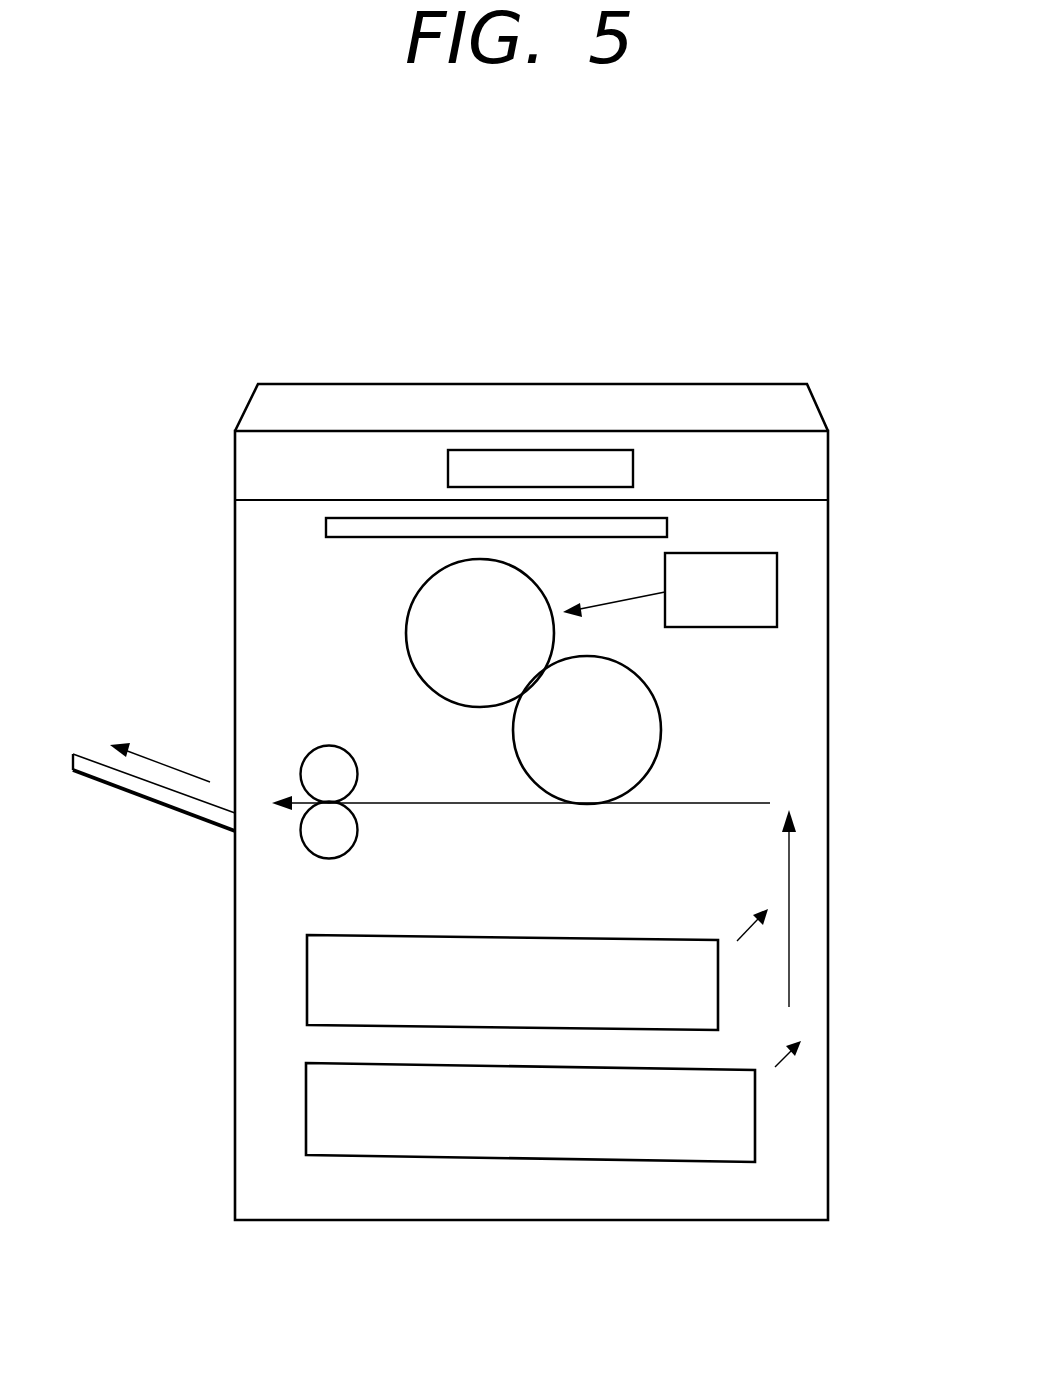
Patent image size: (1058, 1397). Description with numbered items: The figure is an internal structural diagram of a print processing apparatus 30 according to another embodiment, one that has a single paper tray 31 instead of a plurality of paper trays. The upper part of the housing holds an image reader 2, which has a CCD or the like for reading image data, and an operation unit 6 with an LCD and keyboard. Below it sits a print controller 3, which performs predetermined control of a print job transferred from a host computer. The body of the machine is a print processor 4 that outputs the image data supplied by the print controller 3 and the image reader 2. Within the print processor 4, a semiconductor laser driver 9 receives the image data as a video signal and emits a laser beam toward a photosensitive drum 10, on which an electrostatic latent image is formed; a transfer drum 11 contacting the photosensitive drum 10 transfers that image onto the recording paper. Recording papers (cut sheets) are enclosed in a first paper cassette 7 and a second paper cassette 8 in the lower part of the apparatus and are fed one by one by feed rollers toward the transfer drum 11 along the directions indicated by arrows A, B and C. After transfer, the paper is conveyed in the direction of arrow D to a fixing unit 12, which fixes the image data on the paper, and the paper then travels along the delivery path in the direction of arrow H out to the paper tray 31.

The print processing apparatus 30 is at (568, 350).
The image reader 2 is at (737, 385).
The operation unit 6 is at (635, 465).
The print controller 3 is at (669, 528).
The semiconductor laser driver 9 is at (778, 585).
The photosensitive drum 10 is at (412, 600).
The transfer drum 11 is at (643, 678).
The fixing unit 12 is at (342, 745).
The print processor 4 is at (725, 728).
The paper tray 31 is at (125, 793).
The second paper cassette 8 is at (567, 936).
The first paper cassette 7 is at (452, 1162).
The arrow A is at (743, 940).
The arrow B is at (775, 1067).
The arrow C is at (789, 940).
The arrow D is at (744, 803).
The arrow H is at (166, 755).